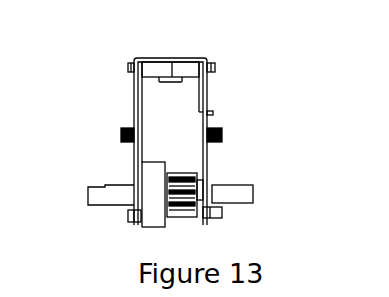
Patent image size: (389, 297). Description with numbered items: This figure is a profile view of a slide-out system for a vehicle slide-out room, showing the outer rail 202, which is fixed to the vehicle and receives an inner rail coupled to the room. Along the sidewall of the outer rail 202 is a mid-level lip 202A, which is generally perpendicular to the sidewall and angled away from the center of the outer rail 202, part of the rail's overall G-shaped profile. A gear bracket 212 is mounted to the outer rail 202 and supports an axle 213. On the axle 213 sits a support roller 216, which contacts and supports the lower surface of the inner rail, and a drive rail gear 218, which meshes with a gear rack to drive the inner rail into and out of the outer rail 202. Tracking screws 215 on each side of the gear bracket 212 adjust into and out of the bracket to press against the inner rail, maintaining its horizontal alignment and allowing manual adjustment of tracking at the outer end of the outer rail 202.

The outer rail 202 is at (188, 58).
The gear bracket 212 is at (207, 92).
The mid-level lip 202A is at (213, 114).
The tracking screws 215 is at (222, 137).
The axle 213 is at (245, 193).
The support roller 216 is at (148, 177).
The drive rail gear 218 is at (213, 212).